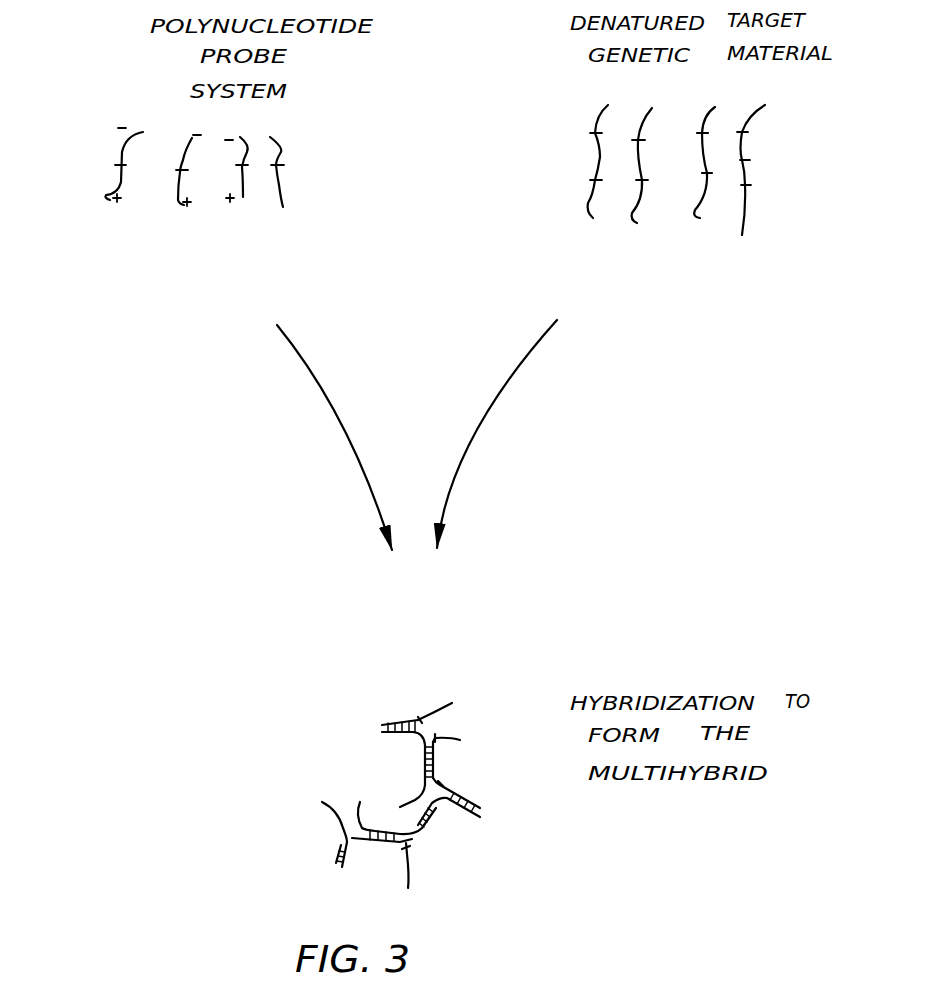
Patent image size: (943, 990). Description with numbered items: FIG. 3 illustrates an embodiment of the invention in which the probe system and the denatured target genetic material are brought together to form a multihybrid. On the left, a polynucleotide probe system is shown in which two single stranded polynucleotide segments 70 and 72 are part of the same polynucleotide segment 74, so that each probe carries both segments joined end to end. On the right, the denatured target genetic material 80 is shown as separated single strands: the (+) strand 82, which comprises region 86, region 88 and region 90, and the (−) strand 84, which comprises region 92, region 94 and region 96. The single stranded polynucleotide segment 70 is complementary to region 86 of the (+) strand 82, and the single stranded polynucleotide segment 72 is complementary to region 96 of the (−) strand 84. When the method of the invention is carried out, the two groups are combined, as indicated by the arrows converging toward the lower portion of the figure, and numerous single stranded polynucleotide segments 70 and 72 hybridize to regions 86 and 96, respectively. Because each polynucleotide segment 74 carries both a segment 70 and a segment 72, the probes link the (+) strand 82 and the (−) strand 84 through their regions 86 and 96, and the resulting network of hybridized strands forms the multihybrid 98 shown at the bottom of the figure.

The single stranded polynucleotide segment 70 is at (118, 148).
The single stranded polynucleotide segment 72 is at (108, 185).
The polynucleotide segment 74 is at (208, 240).
The denatured target genetic material 80 is at (677, 263).
The (+) strand 82 is at (592, 228).
The (−) strand 84 is at (641, 233).
The region 86 is at (593, 115).
The region 88 is at (596, 160).
The region 90 is at (587, 200).
The region 92 is at (756, 120).
The region 94 is at (749, 162).
The region 96 is at (751, 207).
The multihybrid 98 is at (263, 779).